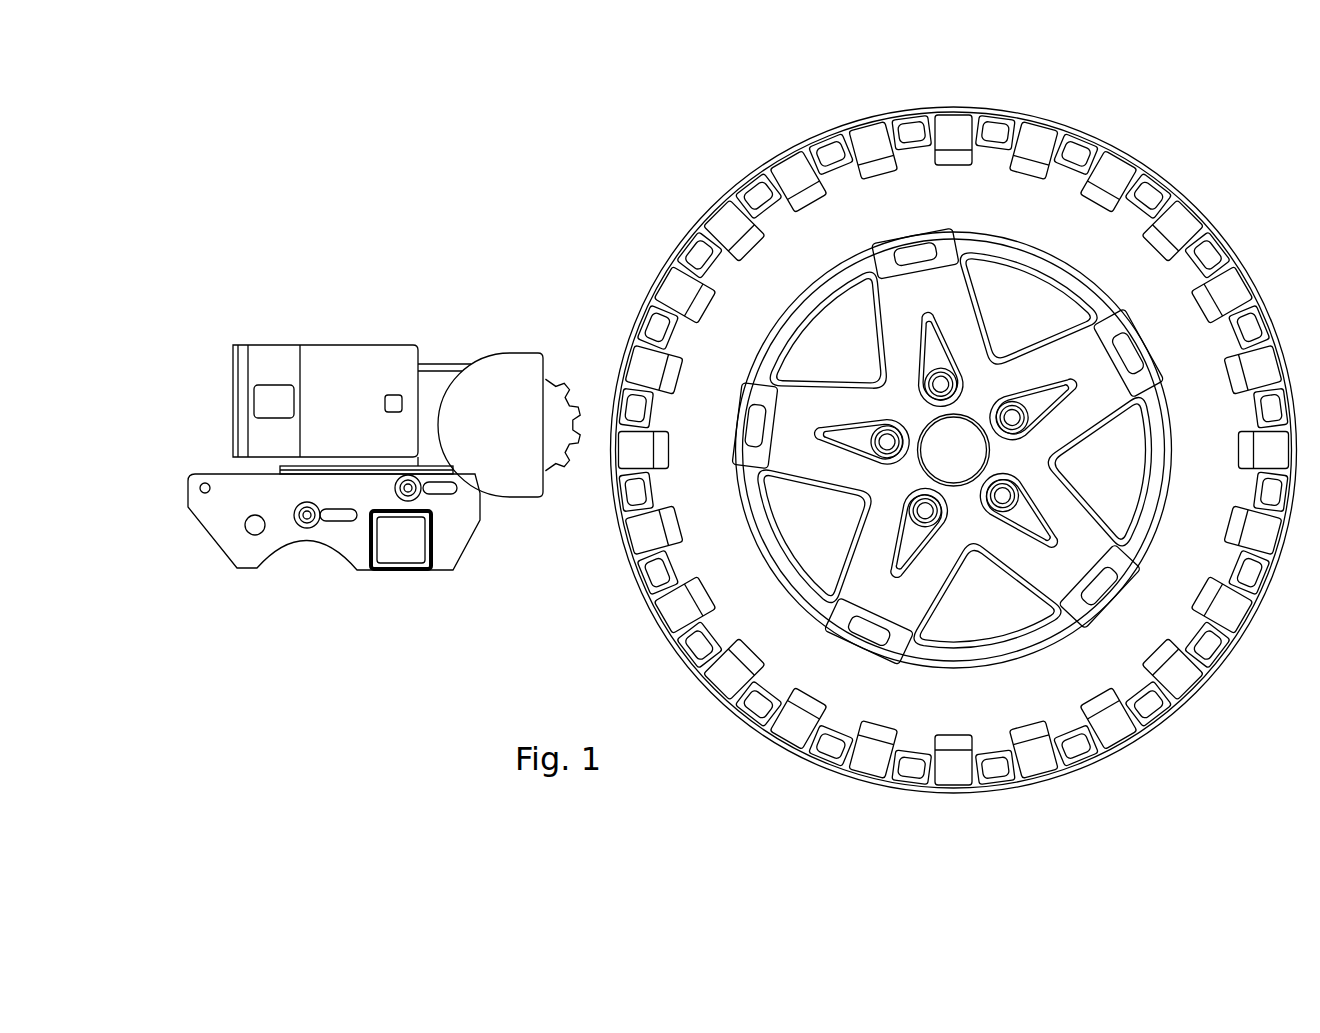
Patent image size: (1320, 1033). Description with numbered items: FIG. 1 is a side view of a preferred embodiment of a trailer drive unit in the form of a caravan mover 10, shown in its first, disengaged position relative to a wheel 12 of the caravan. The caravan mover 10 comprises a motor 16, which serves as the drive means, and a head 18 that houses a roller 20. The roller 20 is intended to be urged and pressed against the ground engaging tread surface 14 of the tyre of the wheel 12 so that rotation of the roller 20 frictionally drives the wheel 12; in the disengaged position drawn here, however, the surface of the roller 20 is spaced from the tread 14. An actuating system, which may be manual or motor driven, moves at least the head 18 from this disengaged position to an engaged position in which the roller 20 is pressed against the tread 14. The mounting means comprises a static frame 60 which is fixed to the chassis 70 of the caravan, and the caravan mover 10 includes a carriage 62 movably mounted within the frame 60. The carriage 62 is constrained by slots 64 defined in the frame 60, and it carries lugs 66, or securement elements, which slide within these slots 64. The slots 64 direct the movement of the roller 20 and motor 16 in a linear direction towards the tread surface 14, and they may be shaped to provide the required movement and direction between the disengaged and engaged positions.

The caravan mover 10 is at (222, 332).
The wheel 12 is at (1014, 393).
The tread surface 14 is at (954, 433).
The motor 16 is at (338, 372).
The head 18 is at (517, 342).
The roller 20 is at (553, 436).
The static frame 60 is at (237, 567).
The carriage 62 is at (285, 468).
The slots 64 is at (337, 522).
The lugs 66 is at (300, 527).
The chassis 70 is at (405, 573).